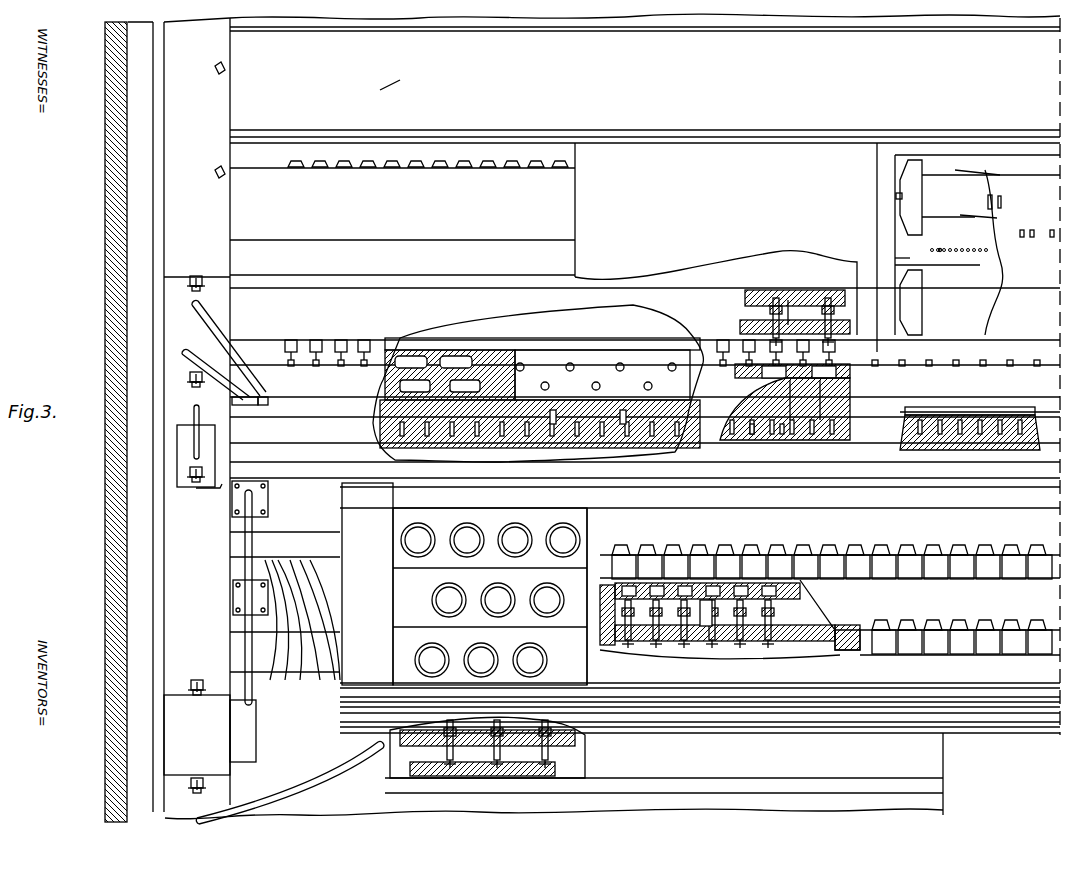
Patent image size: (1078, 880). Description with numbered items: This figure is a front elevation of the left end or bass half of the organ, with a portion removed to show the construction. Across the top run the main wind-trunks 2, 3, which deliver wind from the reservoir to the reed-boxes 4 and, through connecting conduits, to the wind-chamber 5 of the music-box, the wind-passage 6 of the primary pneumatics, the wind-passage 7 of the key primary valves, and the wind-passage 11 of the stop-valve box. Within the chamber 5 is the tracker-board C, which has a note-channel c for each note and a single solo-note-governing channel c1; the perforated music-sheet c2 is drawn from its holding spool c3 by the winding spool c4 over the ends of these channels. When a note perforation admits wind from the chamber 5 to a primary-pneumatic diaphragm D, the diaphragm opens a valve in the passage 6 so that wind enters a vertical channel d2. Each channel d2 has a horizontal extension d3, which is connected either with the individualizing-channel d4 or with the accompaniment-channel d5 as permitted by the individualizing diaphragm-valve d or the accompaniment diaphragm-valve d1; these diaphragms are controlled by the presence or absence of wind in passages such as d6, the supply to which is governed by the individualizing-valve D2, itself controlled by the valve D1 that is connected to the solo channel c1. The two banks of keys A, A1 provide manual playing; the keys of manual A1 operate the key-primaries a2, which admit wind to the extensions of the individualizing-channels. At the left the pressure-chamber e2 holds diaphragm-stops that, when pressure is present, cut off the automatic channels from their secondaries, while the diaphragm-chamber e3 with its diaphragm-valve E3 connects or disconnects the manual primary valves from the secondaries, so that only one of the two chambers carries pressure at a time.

The main wind-trunk 2 is at (197, 684).
The main wind-trunk 3 is at (181, 286).
The reed-box 4 is at (390, 143).
The wind-chamber of the music-box 5 is at (955, 170).
The wind-passage of the primary pneumatics 6 is at (788, 300).
The wind-passage of the key primary valves 7 is at (676, 620).
The wind-passage of the stop-valve box 11 is at (482, 762).
The bank of keys A is at (1032, 648).
The bank of keys A1 is at (1030, 568).
The shaft a is at (1000, 412).
The key-primary a2 is at (705, 626).
The tracker-board C is at (910, 258).
The note-channel c is at (940, 250).
The solo-note-governing channel c1 is at (925, 250).
The perforated music-sheet c2 is at (997, 218).
The holding spool c3 is at (977, 245).
The winding spool c4 is at (937, 300).
The primary-pneumatic diaphragm D is at (190, 286).
The valve D1 is at (188, 470).
The individualizing-valve D2 is at (188, 378).
The individualizing diaphragm-valve d is at (630, 438).
The accompaniment diaphragm-valve d1 is at (540, 438).
The vertical channel d2 is at (800, 408).
The channel extension d3 is at (790, 438).
The individualizing-channel d4 is at (770, 438).
The accompaniment-channel d5 is at (580, 440).
The passage d6 is at (925, 412).
The pressure-chamber e2 is at (271, 593).
The diaphragm-chamber e3 is at (286, 620).
The diaphragm-valve E3 is at (335, 773).